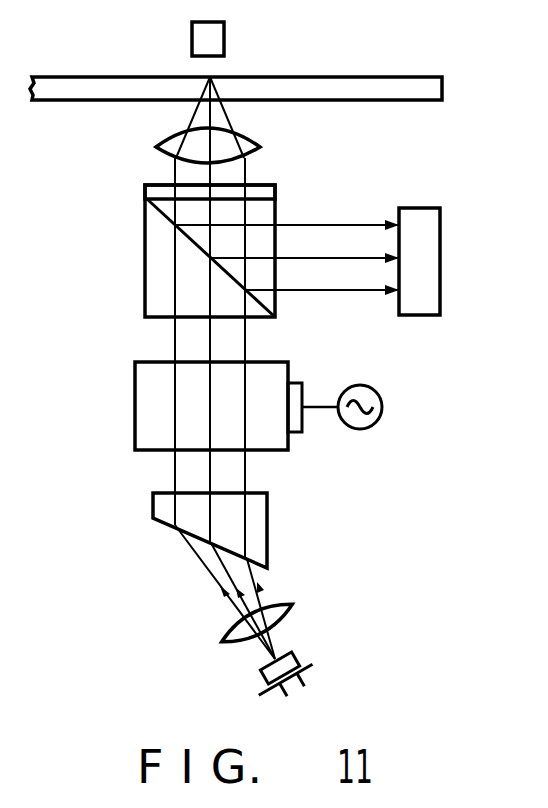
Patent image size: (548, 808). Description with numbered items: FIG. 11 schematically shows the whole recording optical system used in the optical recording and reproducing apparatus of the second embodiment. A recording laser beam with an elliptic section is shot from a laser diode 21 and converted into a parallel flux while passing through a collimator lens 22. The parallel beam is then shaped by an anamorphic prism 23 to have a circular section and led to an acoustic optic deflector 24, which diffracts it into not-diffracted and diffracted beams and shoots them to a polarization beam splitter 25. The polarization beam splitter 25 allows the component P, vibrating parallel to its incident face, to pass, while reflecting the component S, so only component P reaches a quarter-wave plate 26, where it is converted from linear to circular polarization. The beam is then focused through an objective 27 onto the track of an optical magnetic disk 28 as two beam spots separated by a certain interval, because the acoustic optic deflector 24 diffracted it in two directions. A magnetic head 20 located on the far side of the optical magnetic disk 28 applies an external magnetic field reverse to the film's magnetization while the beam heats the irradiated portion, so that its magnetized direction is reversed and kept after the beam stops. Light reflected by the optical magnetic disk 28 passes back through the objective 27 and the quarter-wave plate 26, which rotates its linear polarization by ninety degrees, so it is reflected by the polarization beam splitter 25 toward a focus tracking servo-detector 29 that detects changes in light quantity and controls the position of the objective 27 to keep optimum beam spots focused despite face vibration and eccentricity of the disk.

The magnetic head 20 is at (226, 38).
The laser diode 21 is at (295, 657).
The collimator lens 22 is at (225, 646).
The anamorphic prism 23 is at (153, 507).
The acoustic optic deflector 24 is at (135, 385).
The polarization beam splitter 25 is at (145, 240).
The quarter-wave plate 26 is at (150, 187).
The objective 27 is at (157, 147).
The optical magnetic disk 28 is at (418, 77).
The focus tracking servo-detector 29 is at (418, 208).